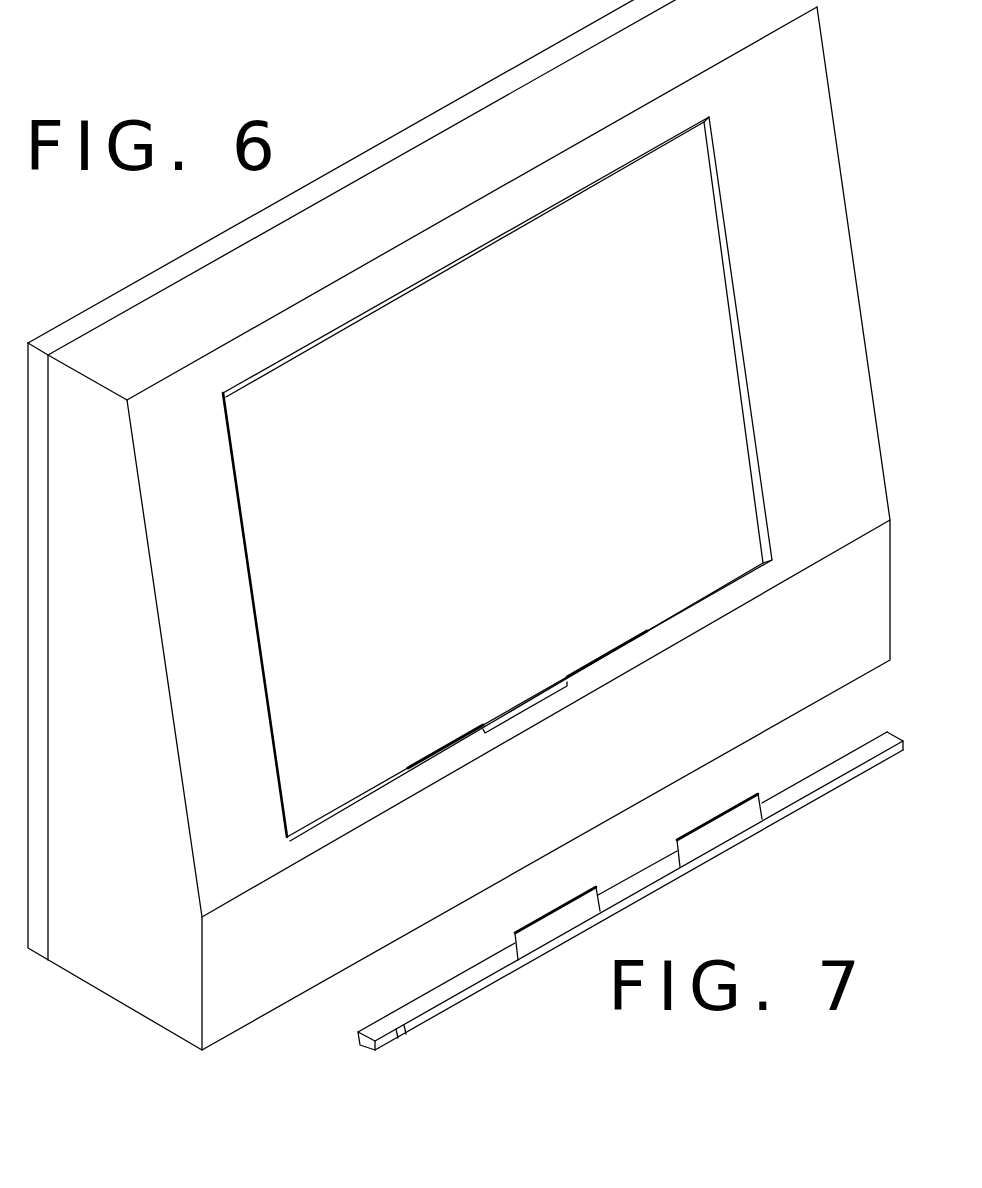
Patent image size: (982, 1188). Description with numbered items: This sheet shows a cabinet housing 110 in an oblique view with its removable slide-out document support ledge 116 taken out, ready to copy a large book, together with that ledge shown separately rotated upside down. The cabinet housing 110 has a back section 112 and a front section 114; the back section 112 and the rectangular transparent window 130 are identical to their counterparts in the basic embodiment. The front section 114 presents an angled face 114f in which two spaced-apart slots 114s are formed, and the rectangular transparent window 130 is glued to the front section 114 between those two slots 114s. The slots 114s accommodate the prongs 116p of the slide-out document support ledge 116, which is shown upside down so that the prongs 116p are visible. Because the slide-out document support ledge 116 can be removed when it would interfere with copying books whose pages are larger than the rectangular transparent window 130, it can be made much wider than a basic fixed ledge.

In FIG. 6, the cabinet housing 110 is at (340, 131).
In FIG. 6, the back section 112 is at (152, 272).
In FIG. 6, the front section 114 is at (145, 1014).
In FIG. 6, the angled face 114f is at (826, 63).
In FIG. 6, the slots 114s is at (607, 655).
In FIG. 7, the slide-out document support ledge 116 is at (463, 997).
In FIG. 7, the prongs 116p is at (556, 906).
In FIG. 6, the rectangular transparent window 130 is at (545, 507).